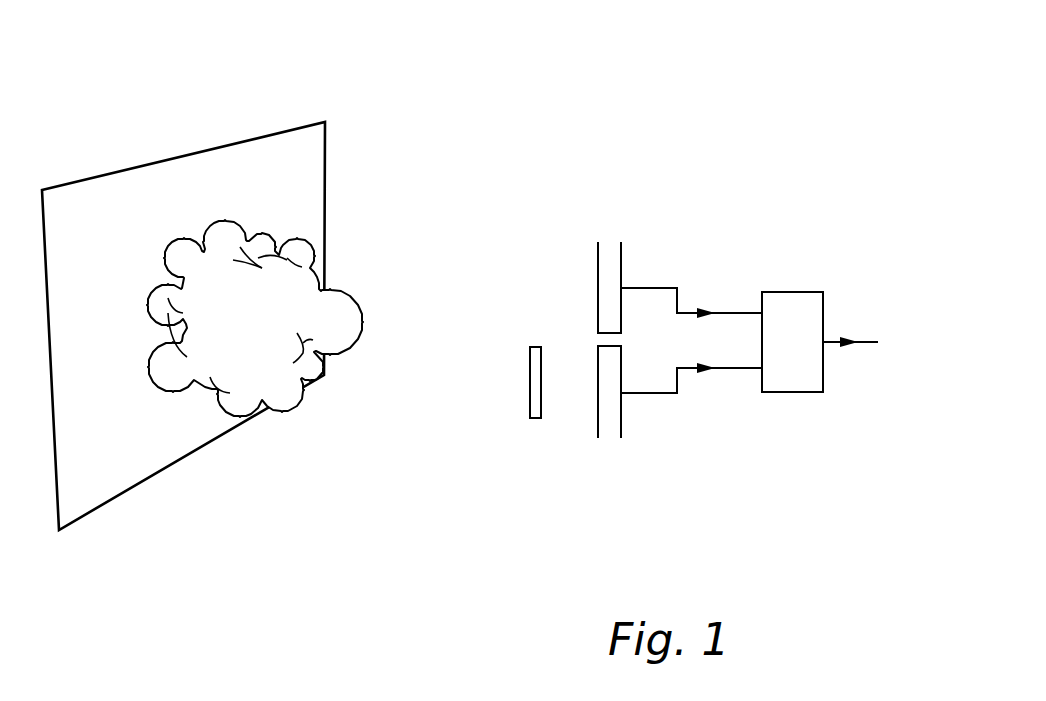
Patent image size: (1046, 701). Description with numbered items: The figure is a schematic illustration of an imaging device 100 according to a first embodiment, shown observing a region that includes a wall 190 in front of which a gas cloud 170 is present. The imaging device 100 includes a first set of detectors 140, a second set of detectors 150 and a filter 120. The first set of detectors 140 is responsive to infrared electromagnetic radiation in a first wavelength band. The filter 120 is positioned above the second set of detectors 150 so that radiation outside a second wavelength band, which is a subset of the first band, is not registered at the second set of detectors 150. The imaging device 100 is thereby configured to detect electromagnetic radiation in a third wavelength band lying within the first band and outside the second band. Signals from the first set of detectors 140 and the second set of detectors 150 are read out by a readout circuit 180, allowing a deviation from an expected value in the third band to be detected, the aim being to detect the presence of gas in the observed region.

The imaging device 100 is at (772, 91).
The filter 120 is at (535, 419).
The first set of detectors 140 is at (610, 247).
The second set of detectors 150 is at (608, 433).
The gas cloud 170 is at (333, 320).
The readout circuit 180 is at (792, 290).
The wall 190 is at (110, 477).